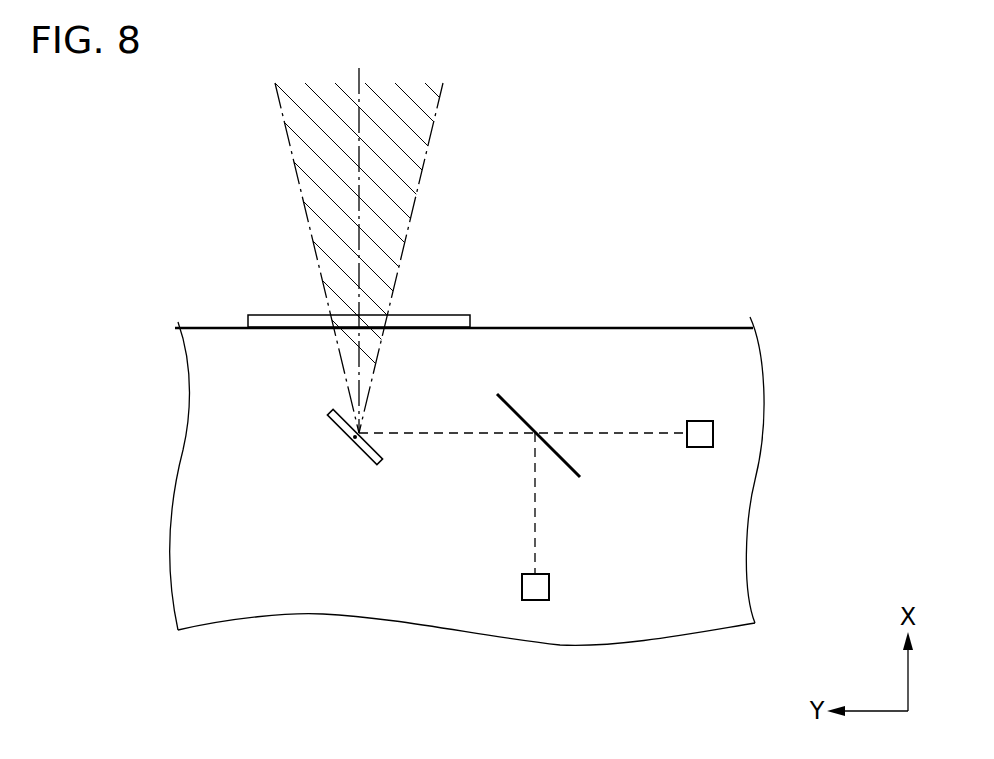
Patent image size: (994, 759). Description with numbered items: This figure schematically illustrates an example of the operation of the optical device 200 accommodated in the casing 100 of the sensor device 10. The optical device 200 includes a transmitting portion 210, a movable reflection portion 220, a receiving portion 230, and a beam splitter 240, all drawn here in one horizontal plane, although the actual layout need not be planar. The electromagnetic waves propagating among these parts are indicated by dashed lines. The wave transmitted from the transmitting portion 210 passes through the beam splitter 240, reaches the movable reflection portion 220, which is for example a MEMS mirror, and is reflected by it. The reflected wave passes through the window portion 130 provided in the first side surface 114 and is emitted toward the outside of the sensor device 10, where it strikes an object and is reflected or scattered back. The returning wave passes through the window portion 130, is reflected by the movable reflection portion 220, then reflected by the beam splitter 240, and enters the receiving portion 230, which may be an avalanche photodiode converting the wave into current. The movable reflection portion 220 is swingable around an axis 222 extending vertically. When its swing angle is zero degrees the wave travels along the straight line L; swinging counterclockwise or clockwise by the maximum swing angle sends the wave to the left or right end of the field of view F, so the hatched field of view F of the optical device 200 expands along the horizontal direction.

The sensor device 10 is at (793, 93).
The substrate 100 is at (609, 305).
The first side surface 114 is at (682, 328).
The window portion 130 is at (437, 322).
The optical device 200 is at (283, 343).
The transmitting portion 210 is at (698, 420).
The movable reflection portion 220 is at (333, 427).
The axis 222 is at (355, 437).
The receiving portion 230 is at (550, 585).
The beam splitter 240 is at (517, 412).
The straight line L is at (358, 158).
The field of view F is at (425, 163).